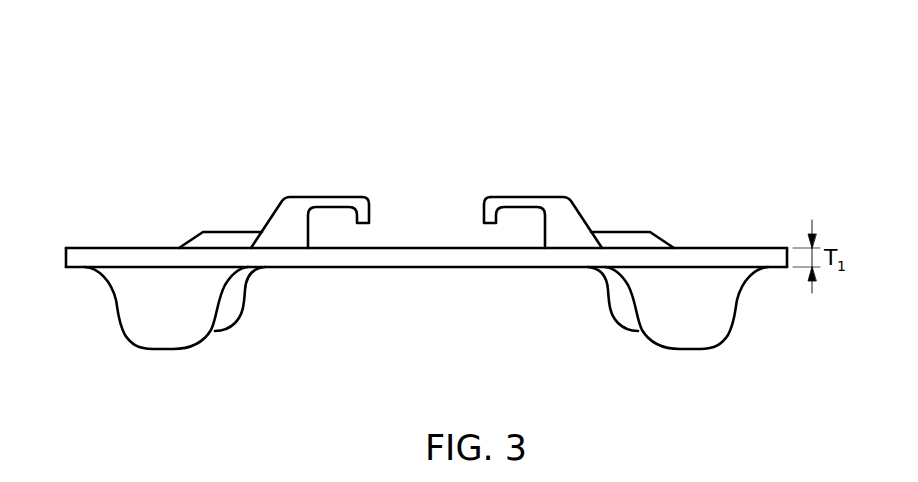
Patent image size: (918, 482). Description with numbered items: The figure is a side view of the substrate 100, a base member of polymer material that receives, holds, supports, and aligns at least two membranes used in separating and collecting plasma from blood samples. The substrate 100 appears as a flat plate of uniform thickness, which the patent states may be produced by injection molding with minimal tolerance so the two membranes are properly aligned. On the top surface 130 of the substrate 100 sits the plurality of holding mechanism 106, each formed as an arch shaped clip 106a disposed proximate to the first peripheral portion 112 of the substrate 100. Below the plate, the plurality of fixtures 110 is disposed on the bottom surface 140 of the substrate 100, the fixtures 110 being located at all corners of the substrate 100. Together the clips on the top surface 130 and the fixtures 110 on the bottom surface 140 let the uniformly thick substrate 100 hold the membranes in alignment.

The substrate 100 is at (724, 56).
The holding mechanism 106 is at (565, 225).
The arch shaped clip 106a is at (483, 213).
The fixtures 110 is at (215, 332).
The first peripheral portion 112 is at (432, 260).
The top surface 130 is at (92, 248).
The bottom surface 140 is at (79, 267).